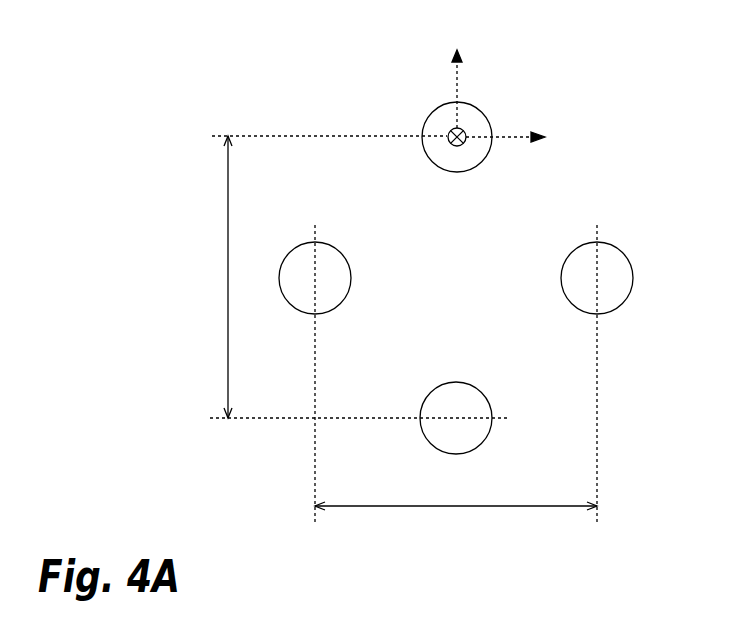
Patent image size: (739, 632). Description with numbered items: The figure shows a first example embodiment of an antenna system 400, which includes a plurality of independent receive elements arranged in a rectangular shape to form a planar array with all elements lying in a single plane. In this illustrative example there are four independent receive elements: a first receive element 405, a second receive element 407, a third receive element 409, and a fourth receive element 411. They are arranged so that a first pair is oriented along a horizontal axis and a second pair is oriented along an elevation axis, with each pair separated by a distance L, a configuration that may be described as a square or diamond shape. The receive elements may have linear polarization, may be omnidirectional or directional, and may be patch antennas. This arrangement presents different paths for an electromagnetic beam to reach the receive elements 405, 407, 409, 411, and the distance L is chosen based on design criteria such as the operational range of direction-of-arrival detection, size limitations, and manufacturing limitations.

The antenna system 400 is at (120, 31).
The receive element 1 (RE1) 405 is at (472, 231).
The receive element RE2 407 is at (472, 375).
The receive element RE3 409 is at (389, 305).
The receive element RE4 411 is at (558, 305).